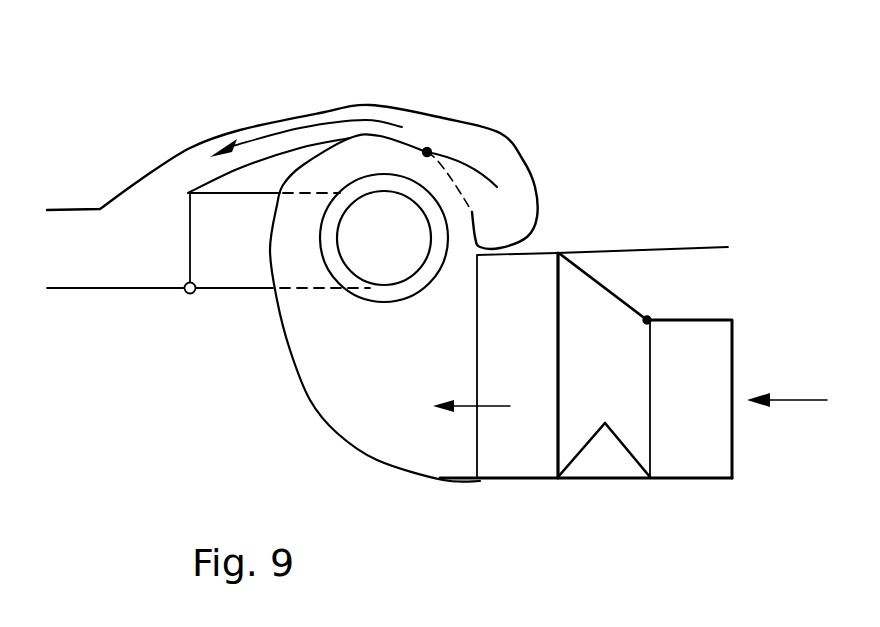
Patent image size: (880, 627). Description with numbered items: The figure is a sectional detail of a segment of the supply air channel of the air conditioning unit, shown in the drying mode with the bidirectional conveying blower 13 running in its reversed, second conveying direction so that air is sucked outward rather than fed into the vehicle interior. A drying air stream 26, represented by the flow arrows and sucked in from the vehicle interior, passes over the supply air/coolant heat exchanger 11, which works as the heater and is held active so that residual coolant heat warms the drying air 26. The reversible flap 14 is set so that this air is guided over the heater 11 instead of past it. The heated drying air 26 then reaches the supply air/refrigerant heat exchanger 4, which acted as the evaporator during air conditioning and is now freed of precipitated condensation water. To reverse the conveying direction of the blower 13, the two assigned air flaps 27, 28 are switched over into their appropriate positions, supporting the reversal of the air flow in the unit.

The supply air/refrigerant heat exchanger 4 is at (530, 278).
The supply air/coolant heat exchanger 11 is at (712, 367).
The conveying blower 13 is at (367, 248).
The reversible flap 14 is at (597, 280).
The drying air stream 26 is at (302, 127).
The air flap 27 is at (187, 233).
The air flap 28 is at (470, 163).